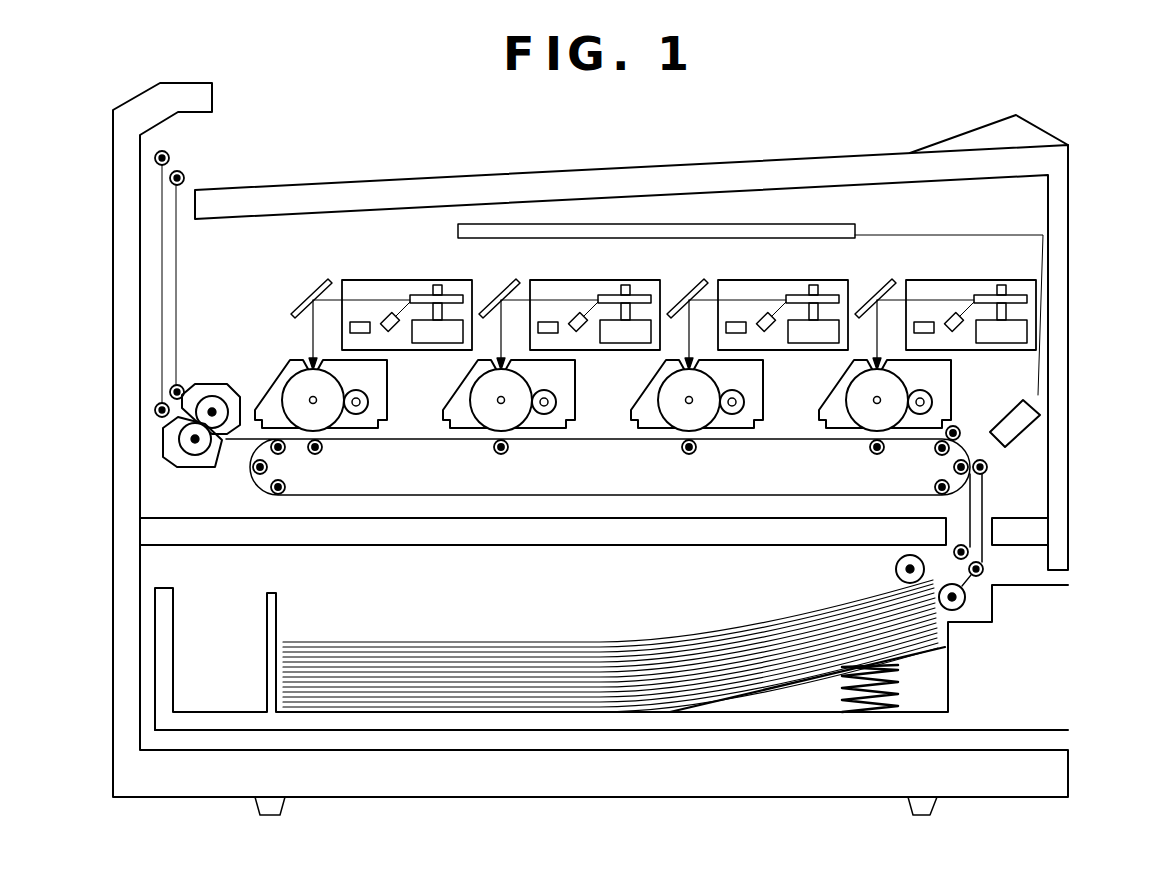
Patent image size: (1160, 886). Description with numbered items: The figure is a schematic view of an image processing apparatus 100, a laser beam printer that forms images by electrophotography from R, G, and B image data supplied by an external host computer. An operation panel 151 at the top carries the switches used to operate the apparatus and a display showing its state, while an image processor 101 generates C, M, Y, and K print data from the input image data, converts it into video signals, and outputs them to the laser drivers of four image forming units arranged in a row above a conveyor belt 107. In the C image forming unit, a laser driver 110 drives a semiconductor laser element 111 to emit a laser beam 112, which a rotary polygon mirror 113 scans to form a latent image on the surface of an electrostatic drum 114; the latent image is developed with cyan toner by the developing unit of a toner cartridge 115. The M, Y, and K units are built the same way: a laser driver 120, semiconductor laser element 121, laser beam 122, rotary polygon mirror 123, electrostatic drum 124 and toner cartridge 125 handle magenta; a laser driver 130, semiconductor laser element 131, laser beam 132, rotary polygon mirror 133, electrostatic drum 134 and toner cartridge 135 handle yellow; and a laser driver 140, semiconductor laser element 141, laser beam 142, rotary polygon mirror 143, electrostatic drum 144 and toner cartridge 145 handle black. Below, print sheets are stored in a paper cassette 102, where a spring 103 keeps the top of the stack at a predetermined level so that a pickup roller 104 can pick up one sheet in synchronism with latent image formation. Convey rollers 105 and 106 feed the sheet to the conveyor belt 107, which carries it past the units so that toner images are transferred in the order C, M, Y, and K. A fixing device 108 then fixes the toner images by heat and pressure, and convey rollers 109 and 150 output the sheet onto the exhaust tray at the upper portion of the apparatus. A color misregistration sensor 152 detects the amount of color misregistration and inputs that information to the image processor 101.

The image processing apparatus 100 is at (1140, 226).
The image processor 101 is at (856, 225).
The paper cassette 102 is at (1062, 620).
The spring 103 is at (897, 697).
The pickup roller 104 is at (894, 571).
The convey roller 105 is at (983, 565).
The convey roller 106 is at (986, 462).
The conveyor belt 107 is at (763, 440).
The fixing device 108 is at (167, 443).
The convey roller 109 is at (153, 410).
The laser driver 110 is at (945, 308).
The semiconductor laser element 111 is at (984, 343).
The laser beam 112 is at (940, 290).
The rotary polygon mirror 113 is at (999, 295).
The electrostatic drum 114 is at (901, 396).
The toner cartridge 115 is at (912, 394).
The laser driver 120 is at (757, 308).
The semiconductor laser element 121 is at (796, 343).
The laser beam 122 is at (752, 290).
The rotary polygon mirror 123 is at (811, 295).
The electrostatic drum 124 is at (713, 396).
The toner cartridge 125 is at (724, 394).
The laser driver 130 is at (569, 308).
The semiconductor laser element 131 is at (608, 343).
The laser beam 132 is at (564, 290).
The rotary polygon mirror 133 is at (623, 295).
The electrostatic drum 134 is at (525, 396).
The toner cartridge 135 is at (536, 394).
The laser driver 140 is at (354, 279).
The semiconductor laser element 141 is at (395, 332).
The laser beam 142 is at (361, 321).
The rotary polygon mirror 143 is at (432, 273).
The electrostatic drum 144 is at (337, 378).
The toner cartridge 145 is at (387, 402).
The convey roller 150 is at (184, 172).
The operation panel 151 is at (1046, 126).
The color misregistration sensor 152 is at (1040, 408).